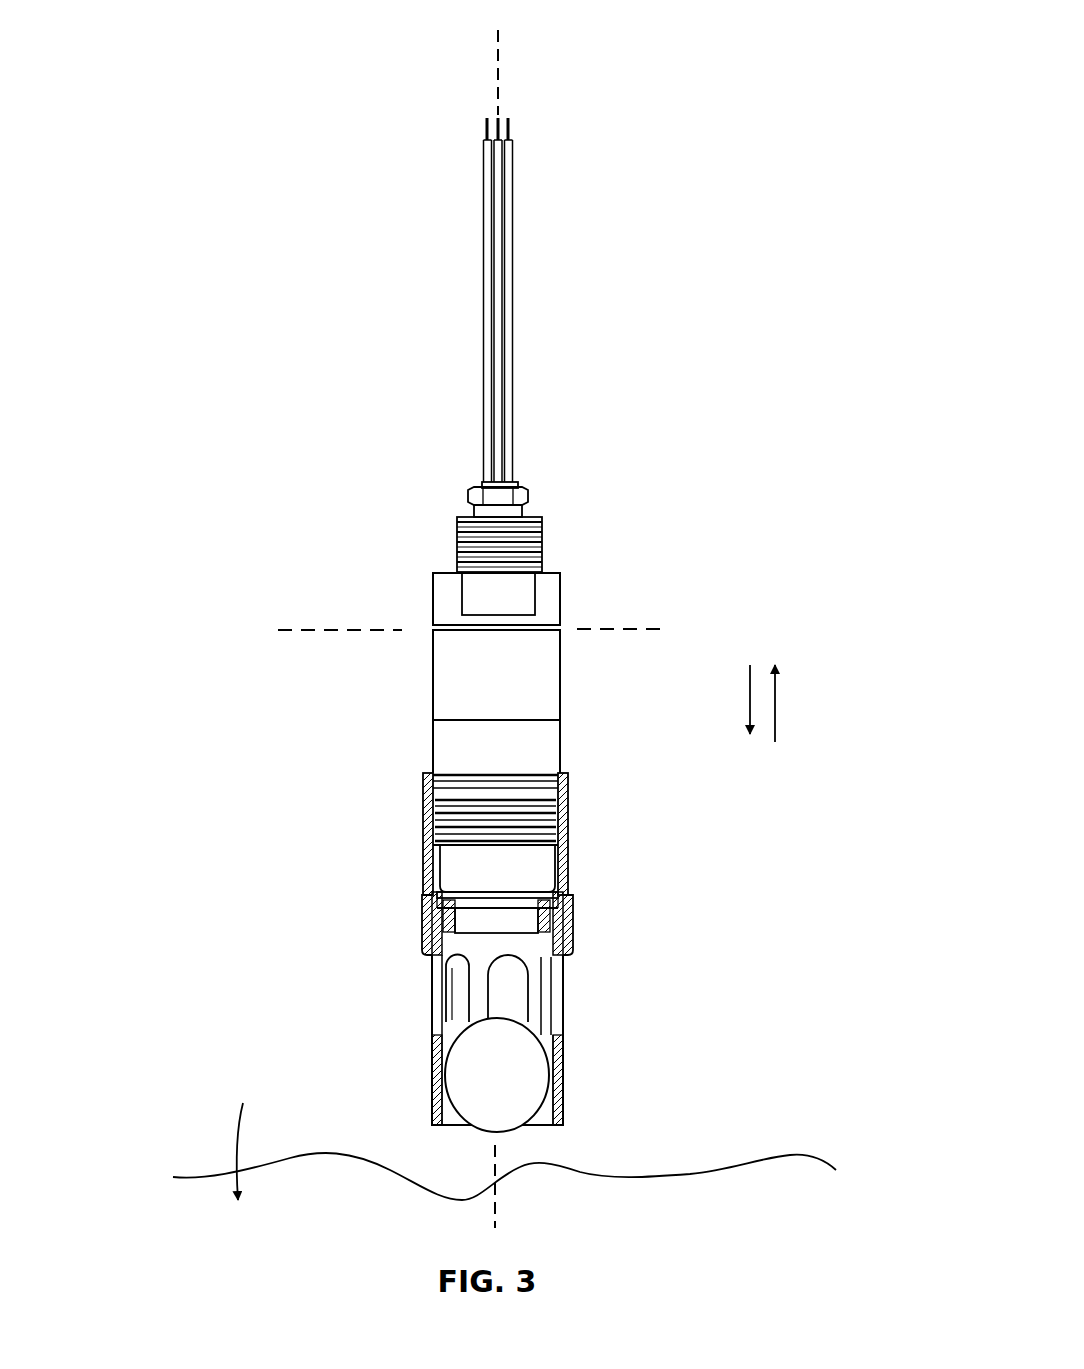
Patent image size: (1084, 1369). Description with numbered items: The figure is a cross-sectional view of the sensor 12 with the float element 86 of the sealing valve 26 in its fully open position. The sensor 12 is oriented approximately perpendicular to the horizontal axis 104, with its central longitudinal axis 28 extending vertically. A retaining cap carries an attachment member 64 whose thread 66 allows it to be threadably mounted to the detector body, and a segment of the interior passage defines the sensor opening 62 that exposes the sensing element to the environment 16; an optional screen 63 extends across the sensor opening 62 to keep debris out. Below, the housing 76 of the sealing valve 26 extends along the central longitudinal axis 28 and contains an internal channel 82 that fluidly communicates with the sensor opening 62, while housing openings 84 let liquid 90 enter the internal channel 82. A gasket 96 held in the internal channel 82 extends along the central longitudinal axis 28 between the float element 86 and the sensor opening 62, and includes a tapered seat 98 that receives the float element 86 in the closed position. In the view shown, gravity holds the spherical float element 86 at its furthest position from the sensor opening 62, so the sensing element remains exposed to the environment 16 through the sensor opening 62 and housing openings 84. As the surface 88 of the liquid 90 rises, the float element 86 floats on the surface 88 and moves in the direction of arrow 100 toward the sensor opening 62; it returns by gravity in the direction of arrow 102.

The sensor 12 is at (507, 650).
The environment 16 is at (220, 908).
The sealing valve 26 is at (570, 1105).
The central longitudinal axis 28 is at (498, 55).
The sensor opening 62 is at (531, 884).
The screen 63 is at (568, 855).
The attachment member 64 is at (570, 812).
The thread 66 is at (452, 795).
The housing 76 is at (430, 1103).
The internal channel 82 is at (540, 960).
The housing openings 84 is at (463, 1008).
The float element 86 is at (483, 1092).
The surface 88 is at (707, 1172).
The liquid 90 is at (759, 1292).
The gasket 96 is at (425, 910).
The tapered seat 98 is at (460, 986).
The arrow 100 is at (775, 700).
The arrow 102 is at (748, 690).
The horizontal axis 104 is at (307, 632).